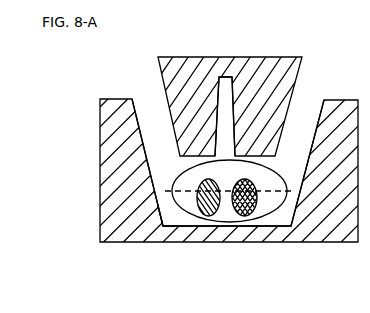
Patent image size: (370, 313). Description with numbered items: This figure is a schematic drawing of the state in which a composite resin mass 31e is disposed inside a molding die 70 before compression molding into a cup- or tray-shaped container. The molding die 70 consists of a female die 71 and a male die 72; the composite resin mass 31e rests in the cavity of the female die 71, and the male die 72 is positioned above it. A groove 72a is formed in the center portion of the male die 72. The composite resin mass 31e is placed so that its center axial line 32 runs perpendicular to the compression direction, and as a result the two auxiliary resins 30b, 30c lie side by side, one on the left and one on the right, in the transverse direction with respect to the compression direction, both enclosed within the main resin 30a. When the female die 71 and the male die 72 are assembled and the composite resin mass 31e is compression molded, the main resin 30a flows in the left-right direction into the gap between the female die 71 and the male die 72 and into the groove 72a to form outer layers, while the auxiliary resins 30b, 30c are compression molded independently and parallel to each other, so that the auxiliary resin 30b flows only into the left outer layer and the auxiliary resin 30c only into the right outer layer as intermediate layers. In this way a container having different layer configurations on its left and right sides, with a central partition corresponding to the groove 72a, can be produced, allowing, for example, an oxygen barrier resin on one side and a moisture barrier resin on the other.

The molding die 70 is at (317, 42).
The female die 71 is at (110, 174).
The male die 72 is at (195, 56).
The groove 72a is at (233, 80).
The composite resin mass 31e is at (283, 166).
The center axial line 32 is at (165, 218).
The main resin 30a is at (273, 205).
The auxiliary resin 30b is at (208, 216).
The auxiliary resin 30c is at (247, 216).